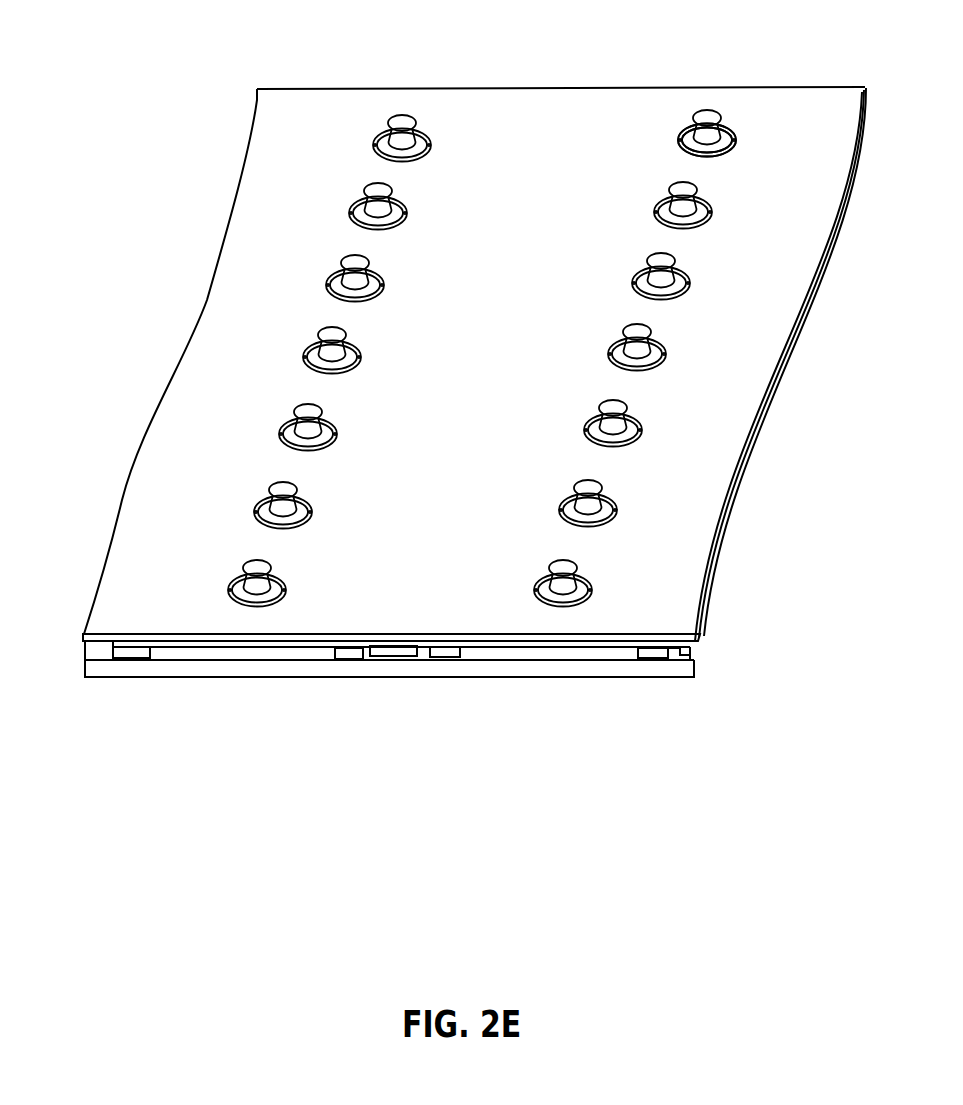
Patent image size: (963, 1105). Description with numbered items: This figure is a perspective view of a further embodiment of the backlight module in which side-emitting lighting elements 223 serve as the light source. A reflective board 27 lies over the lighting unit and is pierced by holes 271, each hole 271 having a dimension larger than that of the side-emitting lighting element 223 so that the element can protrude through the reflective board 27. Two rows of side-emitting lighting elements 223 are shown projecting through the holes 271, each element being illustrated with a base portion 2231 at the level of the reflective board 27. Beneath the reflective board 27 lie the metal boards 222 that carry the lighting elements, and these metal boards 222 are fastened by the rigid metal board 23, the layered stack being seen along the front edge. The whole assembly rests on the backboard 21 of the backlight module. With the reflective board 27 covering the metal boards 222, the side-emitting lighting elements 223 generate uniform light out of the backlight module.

The backboard 21 is at (132, 673).
The metal board 222 is at (218, 657).
The side-emitting lighting element 223 is at (707, 117).
The ring of pin 2231 is at (681, 133).
The rigid metal board 23 is at (336, 653).
The reflective board 27 is at (277, 120).
The hole 271 is at (678, 136).